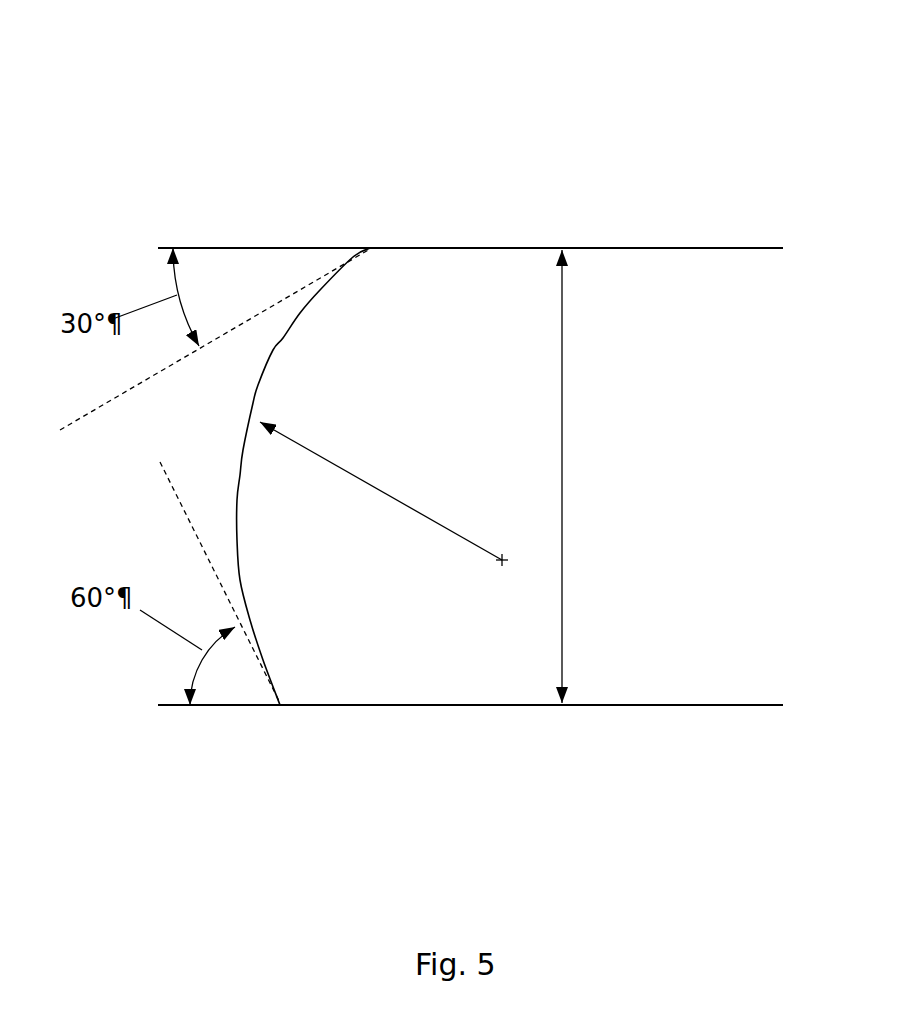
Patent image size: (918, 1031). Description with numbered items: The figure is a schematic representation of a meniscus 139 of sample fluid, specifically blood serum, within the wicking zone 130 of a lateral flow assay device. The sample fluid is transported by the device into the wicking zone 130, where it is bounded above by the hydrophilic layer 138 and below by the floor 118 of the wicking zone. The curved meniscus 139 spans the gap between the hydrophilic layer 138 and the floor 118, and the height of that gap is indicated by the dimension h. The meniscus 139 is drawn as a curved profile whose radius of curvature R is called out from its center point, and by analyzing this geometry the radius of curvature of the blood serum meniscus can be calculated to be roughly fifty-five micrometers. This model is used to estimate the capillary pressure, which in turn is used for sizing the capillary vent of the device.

The meniscus 139 is at (284, 320).
The hydrophilic layer 138 is at (597, 251).
The floor of the wicking zone 118 is at (637, 701).
The wicking zone 130 is at (499, 670).
The channel height h is at (560, 470).
The radius of curvature R is at (380, 500).